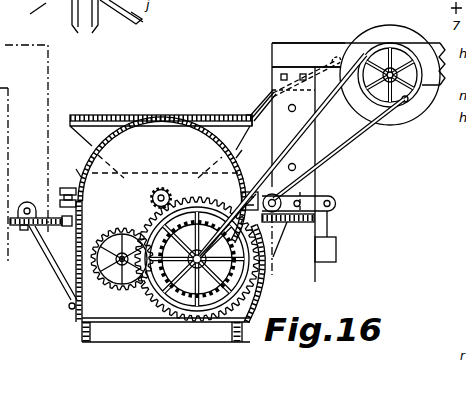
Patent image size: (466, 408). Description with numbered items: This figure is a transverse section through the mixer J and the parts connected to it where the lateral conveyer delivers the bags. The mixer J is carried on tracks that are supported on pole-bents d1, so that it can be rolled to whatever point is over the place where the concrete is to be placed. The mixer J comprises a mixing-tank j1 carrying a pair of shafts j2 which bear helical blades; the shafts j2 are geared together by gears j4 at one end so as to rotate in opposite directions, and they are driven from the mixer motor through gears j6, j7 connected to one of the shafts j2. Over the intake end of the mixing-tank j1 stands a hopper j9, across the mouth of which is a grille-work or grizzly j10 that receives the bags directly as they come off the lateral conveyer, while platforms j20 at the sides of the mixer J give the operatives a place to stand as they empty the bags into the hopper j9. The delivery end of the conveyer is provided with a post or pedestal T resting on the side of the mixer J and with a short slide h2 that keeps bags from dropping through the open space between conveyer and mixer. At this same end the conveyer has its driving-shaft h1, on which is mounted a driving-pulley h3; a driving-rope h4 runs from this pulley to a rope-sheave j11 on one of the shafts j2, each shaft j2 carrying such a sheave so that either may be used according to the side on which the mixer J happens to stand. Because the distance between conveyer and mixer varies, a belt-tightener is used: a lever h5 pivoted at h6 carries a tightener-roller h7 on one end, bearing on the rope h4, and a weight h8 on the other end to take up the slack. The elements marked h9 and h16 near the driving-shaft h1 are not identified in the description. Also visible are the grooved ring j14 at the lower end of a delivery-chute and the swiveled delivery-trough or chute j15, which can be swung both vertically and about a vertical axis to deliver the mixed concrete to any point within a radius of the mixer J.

The mixer J is at (160, 150).
The mixing-tank j1 is at (71, 165).
The shafts j2 is at (278, 279).
The gears j4 is at (157, 303).
The gear j6 is at (166, 189).
The gear j7 is at (204, 198).
The hopper j9 is at (245, 146).
The grille-work or grizzly j10 is at (211, 113).
The rope-sheave j11 is at (123, 246).
The grooved ring j14 is at (26, 11).
The swiveled delivery-trough or chute j15 is at (133, 14).
The platforms j20 is at (345, 219).
The pole-bents d1 is at (85, 22).
The driving-shaft h1 is at (398, 66).
The short slide h2 is at (262, 103).
The driving-pulley h3 is at (406, 103).
The driving-rope h4 is at (332, 152).
The lever h5 is at (331, 205).
The pivot h6 is at (38, 194).
The tightener-roller h7 is at (272, 194).
The weight h8 is at (337, 249).
The frame beam h9 is at (313, 54).
The wheel guard h16 is at (372, 30).
The post or pedestal T is at (312, 135).